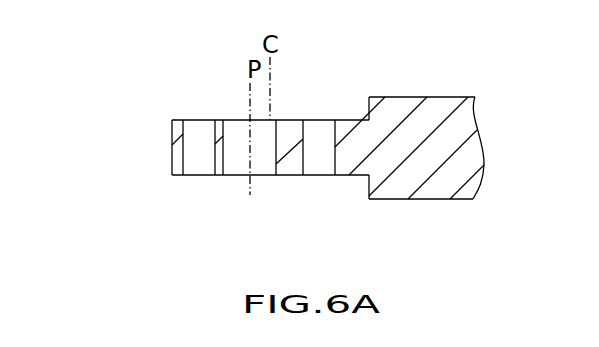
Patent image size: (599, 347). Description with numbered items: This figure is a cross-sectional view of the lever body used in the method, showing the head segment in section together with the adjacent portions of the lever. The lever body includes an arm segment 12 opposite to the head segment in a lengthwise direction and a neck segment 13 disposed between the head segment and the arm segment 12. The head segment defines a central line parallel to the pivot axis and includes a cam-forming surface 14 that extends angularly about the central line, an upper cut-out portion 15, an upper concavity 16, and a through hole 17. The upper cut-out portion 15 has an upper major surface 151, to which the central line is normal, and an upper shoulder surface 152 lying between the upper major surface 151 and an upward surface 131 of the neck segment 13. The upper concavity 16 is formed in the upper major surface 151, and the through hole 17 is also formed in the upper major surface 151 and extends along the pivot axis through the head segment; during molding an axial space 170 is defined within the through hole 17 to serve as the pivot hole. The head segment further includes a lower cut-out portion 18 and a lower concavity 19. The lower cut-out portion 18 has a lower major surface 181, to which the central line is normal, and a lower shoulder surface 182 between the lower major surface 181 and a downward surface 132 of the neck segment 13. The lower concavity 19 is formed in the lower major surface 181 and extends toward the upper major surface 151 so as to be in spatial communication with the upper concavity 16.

The arm segment 12 is at (137, 132).
The neck segment 13 is at (427, 118).
The upward surface 131 is at (393, 97).
The downward surface 132 is at (397, 199).
The cam-forming surface 14 is at (172, 154).
The upper cut-out portion 15 is at (339, 100).
The upper major surface 151 is at (175, 119).
The upper shoulder surface 152 is at (368, 108).
The upper concavity 16 is at (195, 145).
The through hole 17 is at (225, 145).
The axial space 170 is at (267, 167).
The lower cut-out portion 18 is at (187, 199).
The lower major surface 181 is at (190, 176).
The lower shoulder surface 182 is at (366, 178).
The lower concavity 19 is at (211, 163).